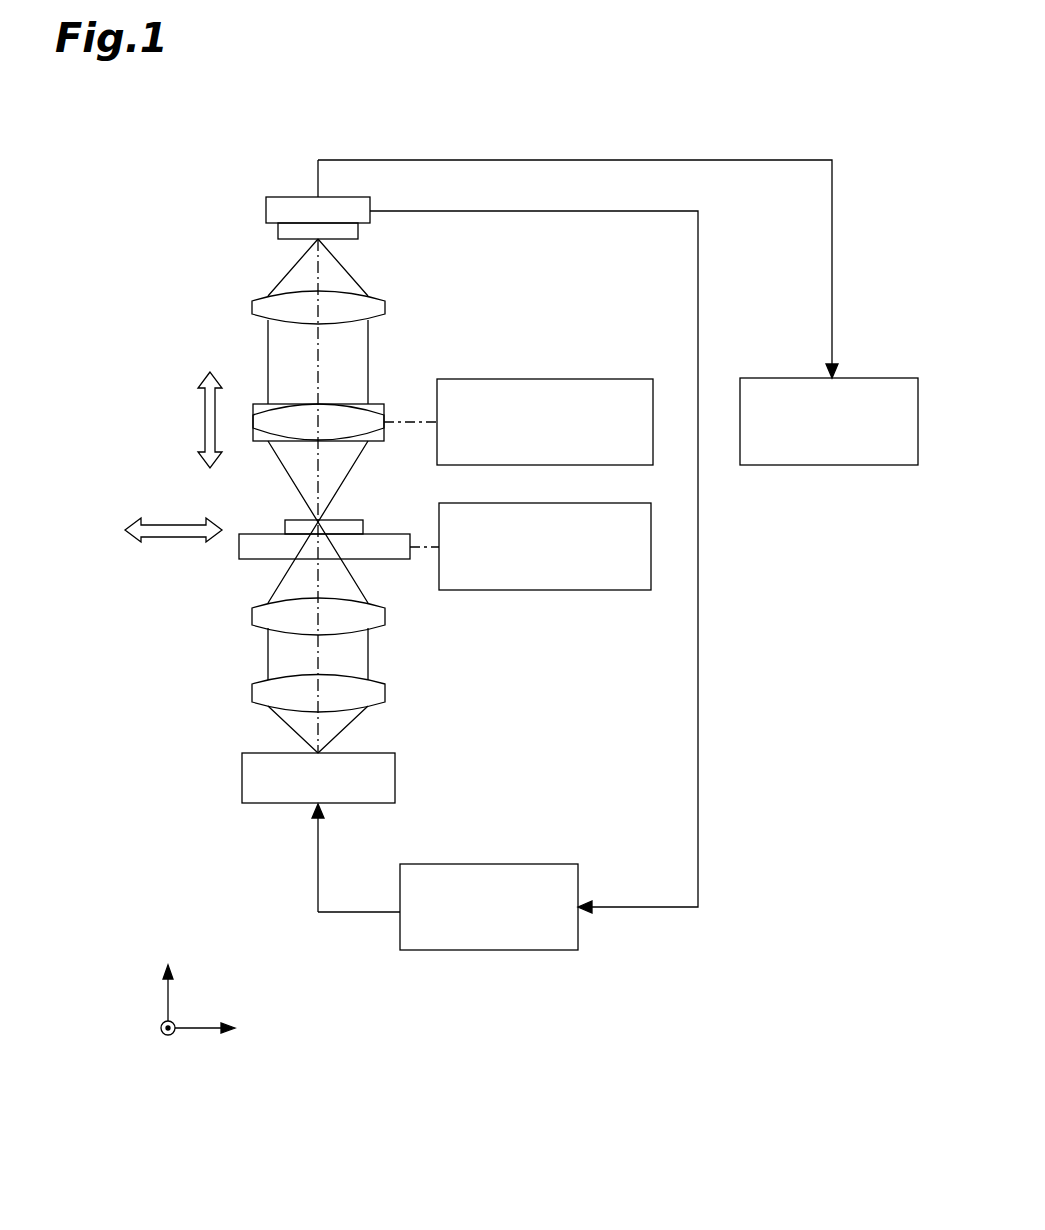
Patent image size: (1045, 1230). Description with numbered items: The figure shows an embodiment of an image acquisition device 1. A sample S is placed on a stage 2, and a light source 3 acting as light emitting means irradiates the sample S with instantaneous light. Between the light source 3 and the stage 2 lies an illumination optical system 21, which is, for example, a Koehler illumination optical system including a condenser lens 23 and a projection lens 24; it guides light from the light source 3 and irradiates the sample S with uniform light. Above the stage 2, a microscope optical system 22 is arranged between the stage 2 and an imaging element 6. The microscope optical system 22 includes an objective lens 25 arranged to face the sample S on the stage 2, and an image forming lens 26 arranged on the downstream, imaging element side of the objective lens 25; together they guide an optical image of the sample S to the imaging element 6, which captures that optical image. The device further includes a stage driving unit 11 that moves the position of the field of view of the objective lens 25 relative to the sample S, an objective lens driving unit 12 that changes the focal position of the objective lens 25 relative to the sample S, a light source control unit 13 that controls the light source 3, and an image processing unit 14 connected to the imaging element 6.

The image acquisition device 1 is at (216, 170).
The imaging element 6 is at (292, 197).
The microscope optical system 22 is at (157, 285).
The image forming lens 26 is at (252, 310).
The objective lens 25 is at (253, 405).
The sample S is at (285, 518).
The stage 2 is at (239, 548).
The illumination optical system 21 is at (157, 623).
The projection lens 24 is at (252, 617).
The condenser lens 23 is at (252, 693).
The light source 3 is at (242, 780).
The objective lens driving unit 12 is at (605, 378).
The stage driving unit 11 is at (605, 591).
The light source control unit 13 is at (552, 863).
The image processing unit 14 is at (895, 378).